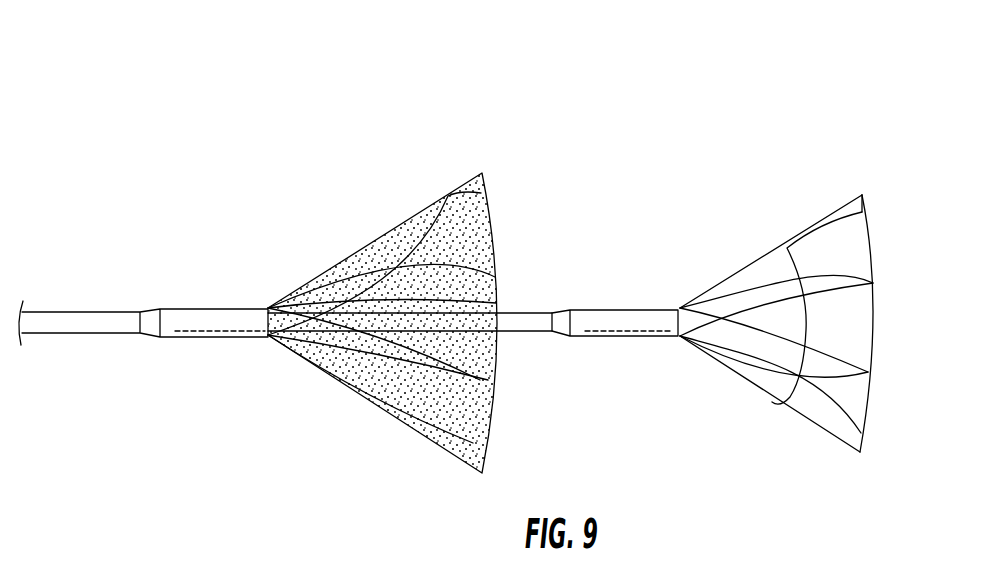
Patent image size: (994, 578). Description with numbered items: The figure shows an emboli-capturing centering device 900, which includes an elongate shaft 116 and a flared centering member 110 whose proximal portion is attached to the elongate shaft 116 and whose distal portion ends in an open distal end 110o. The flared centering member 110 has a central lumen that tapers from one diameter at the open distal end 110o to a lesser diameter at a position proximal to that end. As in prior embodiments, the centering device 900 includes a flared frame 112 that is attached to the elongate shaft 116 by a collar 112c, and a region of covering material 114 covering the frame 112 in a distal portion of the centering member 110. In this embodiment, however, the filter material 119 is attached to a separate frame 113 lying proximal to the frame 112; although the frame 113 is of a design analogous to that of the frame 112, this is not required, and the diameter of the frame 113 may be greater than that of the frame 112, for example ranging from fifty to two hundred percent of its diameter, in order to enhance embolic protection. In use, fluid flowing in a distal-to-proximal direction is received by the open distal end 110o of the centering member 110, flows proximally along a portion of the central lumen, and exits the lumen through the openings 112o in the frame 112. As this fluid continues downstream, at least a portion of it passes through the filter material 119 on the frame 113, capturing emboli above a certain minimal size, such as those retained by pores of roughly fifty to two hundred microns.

The emboli-capturing centering device 900 is at (670, 80).
The elongate shaft 116 is at (54, 323).
The collar 112c is at (560, 308).
The frame 113 is at (460, 183).
The filter material 119 is at (330, 290).
The flared centering member 110 is at (758, 232).
The open distal end 110o is at (880, 278).
The covering material 114 is at (855, 197).
The flared frame 112 is at (727, 282).
The openings 112o is at (745, 350).